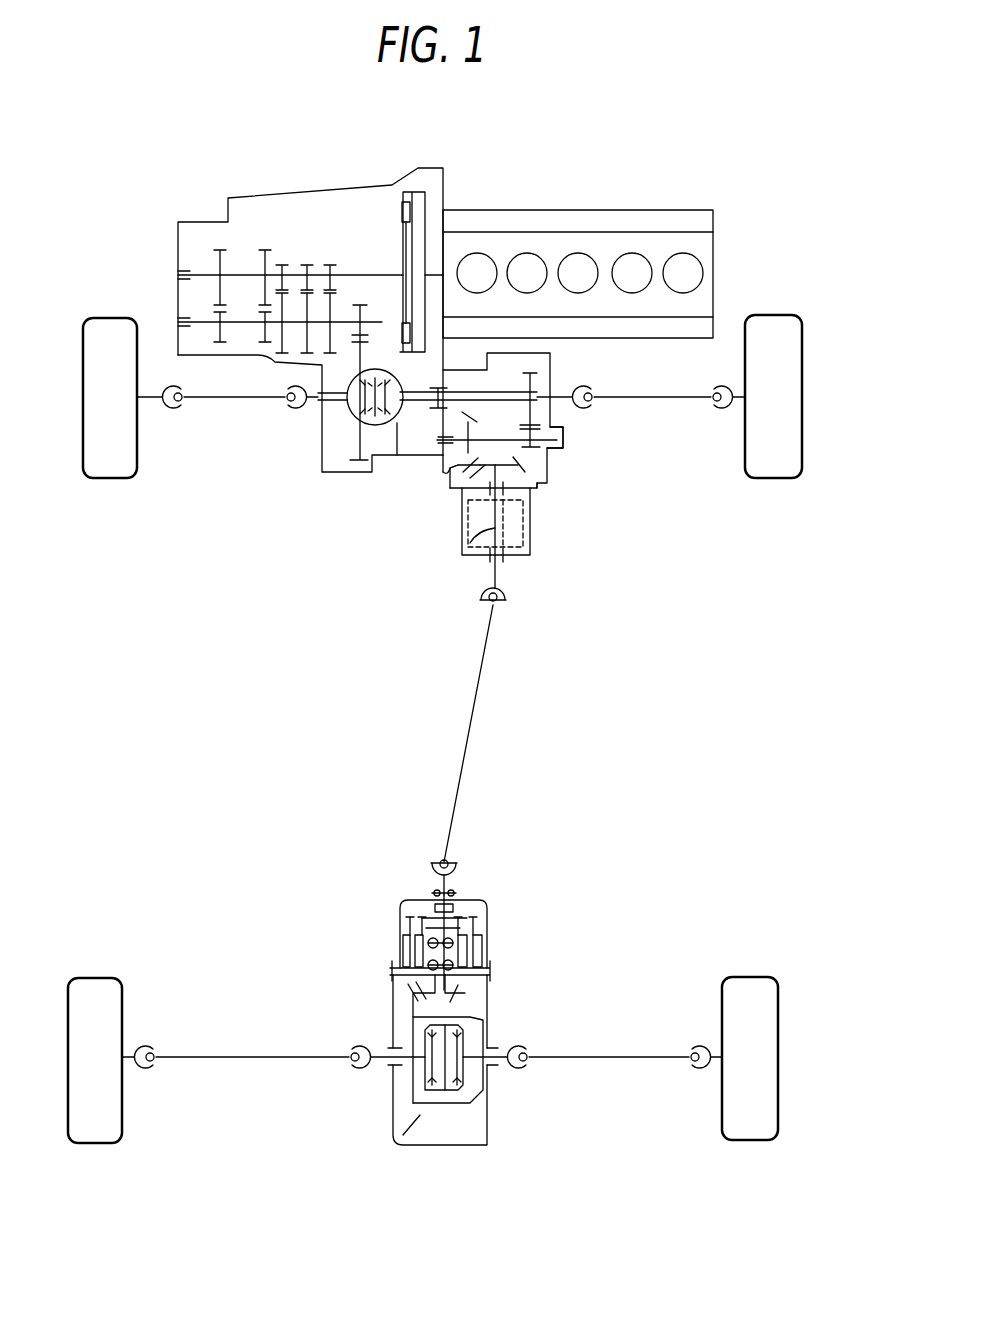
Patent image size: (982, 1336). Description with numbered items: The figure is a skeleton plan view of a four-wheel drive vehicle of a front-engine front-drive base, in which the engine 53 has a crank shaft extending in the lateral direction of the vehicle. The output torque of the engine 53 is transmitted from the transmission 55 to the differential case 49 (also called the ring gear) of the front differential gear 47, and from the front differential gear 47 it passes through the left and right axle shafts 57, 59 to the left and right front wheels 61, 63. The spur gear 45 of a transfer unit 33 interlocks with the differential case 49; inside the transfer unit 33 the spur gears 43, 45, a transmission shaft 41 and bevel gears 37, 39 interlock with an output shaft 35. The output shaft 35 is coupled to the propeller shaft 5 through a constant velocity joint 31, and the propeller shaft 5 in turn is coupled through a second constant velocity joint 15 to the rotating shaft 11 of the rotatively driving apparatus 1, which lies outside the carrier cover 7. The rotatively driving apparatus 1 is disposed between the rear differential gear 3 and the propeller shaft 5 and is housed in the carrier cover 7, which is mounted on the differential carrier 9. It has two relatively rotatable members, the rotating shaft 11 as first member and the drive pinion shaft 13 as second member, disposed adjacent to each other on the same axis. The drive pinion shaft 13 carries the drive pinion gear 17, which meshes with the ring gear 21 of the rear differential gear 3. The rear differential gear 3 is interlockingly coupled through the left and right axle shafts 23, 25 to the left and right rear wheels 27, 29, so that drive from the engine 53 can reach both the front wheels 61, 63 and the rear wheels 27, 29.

The rotatively driving apparatus 1 is at (491, 1049).
The rear differential gear 3 is at (487, 1012).
The propeller shaft 5 is at (470, 727).
The carrier cover 7 is at (487, 910).
The differential carrier 9 is at (490, 1133).
The rotating shaft 11 is at (447, 883).
The drive pinion shaft 13 is at (492, 975).
The constant velocity joint 15 is at (430, 872).
The drive pinion gear 17 is at (462, 998).
The ring gear 21 is at (421, 1130).
The left rear axle shaft 23 is at (296, 1057).
The right rear axle shaft 25 is at (626, 1057).
The left rear wheel 27 is at (97, 978).
The right rear wheel 29 is at (755, 977).
The constant velocity joint 31 is at (506, 597).
The transfer unit 33 is at (547, 487).
The output shaft 35 is at (470, 555).
The bevel gear 37 is at (551, 478).
The bevel gear 39 is at (452, 487).
The transmission shaft 41 is at (563, 449).
The spur gear 43 is at (552, 458).
The spur gear 45 is at (527, 375).
The front differential gear 47 is at (348, 428).
The differential case 49 is at (397, 458).
The engine 53 is at (582, 210).
The transmission 55 is at (340, 187).
The left front axle shaft 57 is at (223, 398).
The right front axle shaft 59 is at (667, 397).
The left front wheel 61 is at (115, 318).
The right front wheel 63 is at (782, 315).